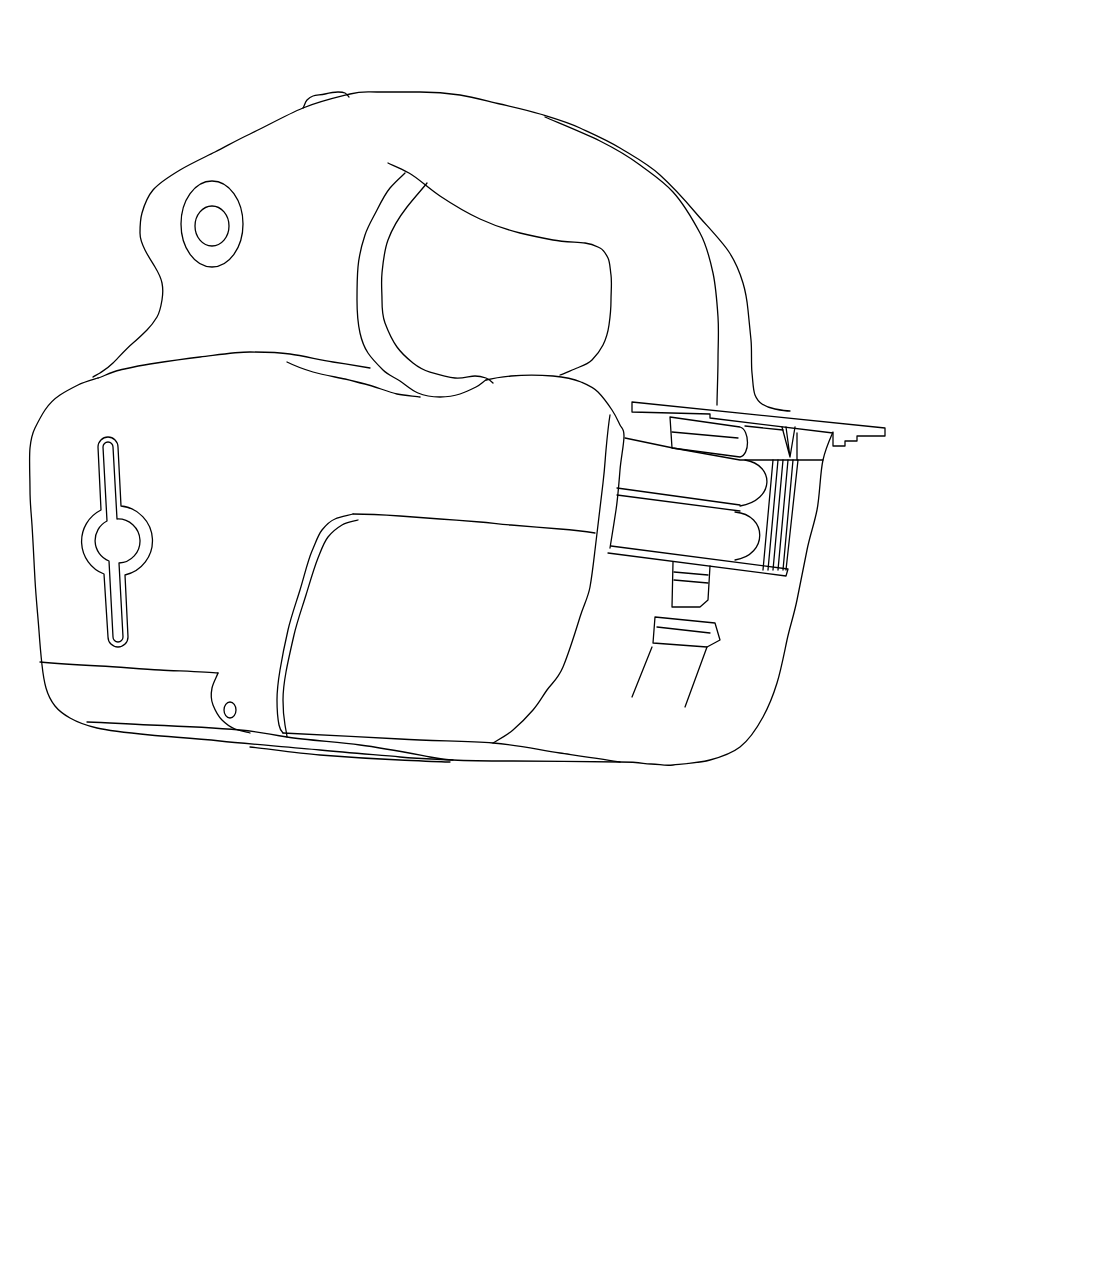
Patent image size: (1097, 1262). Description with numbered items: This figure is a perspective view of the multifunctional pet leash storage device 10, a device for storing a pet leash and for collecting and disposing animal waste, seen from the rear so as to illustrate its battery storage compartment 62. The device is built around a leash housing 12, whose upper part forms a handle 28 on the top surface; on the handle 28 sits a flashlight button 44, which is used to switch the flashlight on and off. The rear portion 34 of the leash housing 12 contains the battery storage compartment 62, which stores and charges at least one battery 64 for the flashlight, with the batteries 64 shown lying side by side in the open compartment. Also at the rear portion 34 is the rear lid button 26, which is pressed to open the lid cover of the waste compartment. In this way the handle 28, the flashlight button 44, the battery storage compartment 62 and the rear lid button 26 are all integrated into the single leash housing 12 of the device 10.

The multifunctional pet leash storage device 10 is at (667, 23).
The leash housing 12 is at (757, 336).
The rear lid button 26 is at (708, 645).
The handle 28 is at (603, 163).
The rear portion 34 is at (775, 718).
The flashlight button 44 is at (327, 97).
The battery storage compartment 62 is at (817, 505).
The battery 64 is at (740, 487).